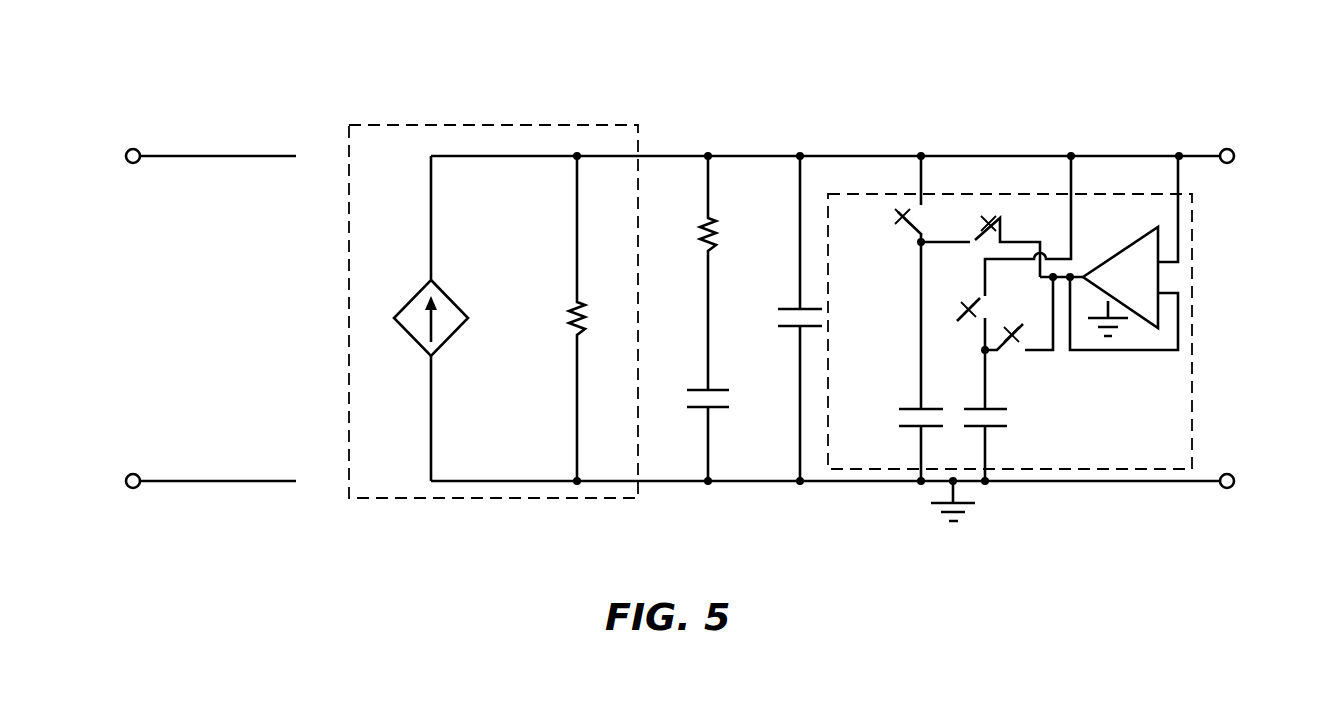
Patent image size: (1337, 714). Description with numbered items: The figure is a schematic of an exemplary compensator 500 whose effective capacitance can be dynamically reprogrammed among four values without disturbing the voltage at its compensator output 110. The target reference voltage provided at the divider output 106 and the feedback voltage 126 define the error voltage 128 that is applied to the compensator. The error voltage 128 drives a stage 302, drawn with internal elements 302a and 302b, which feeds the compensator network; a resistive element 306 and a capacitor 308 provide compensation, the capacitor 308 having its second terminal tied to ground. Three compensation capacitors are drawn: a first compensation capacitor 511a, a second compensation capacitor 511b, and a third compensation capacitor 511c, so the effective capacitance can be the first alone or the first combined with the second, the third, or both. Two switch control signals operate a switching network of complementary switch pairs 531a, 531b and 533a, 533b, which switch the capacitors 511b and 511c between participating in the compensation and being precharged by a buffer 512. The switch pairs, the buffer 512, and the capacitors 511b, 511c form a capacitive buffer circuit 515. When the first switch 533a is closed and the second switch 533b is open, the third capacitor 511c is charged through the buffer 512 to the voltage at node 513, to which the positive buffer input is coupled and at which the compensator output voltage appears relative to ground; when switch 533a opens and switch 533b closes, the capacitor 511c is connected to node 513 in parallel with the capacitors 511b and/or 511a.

The compensator 500 is at (372, 52).
The output of selectable voltage divider 106 is at (133, 149).
The feedback voltage 126 is at (133, 489).
The error voltage 128 is at (278, 318).
The transconductance amplifier model 302 is at (406, 154).
The voltage controlled current source 302a is at (414, 300).
The output resistor 302b is at (572, 305).
The resistive element 306 is at (702, 222).
The capacitor 308 is at (700, 410).
The first compensation capacitor 511a is at (790, 308).
The second compensation capacitor 511b is at (917, 405).
The third compensation capacitor 511c is at (1000, 418).
The switch of first complementary switch pair 531a is at (990, 213).
The switch of first complementary switch pair 531b is at (903, 205).
The first switch 533a is at (1036, 352).
The second switch 533b is at (955, 305).
The buffer 512 is at (1117, 258).
The node 513 is at (1179, 150).
The compensator output 110 is at (1292, 312).
The capacitive buffer circuit 515 is at (1192, 420).